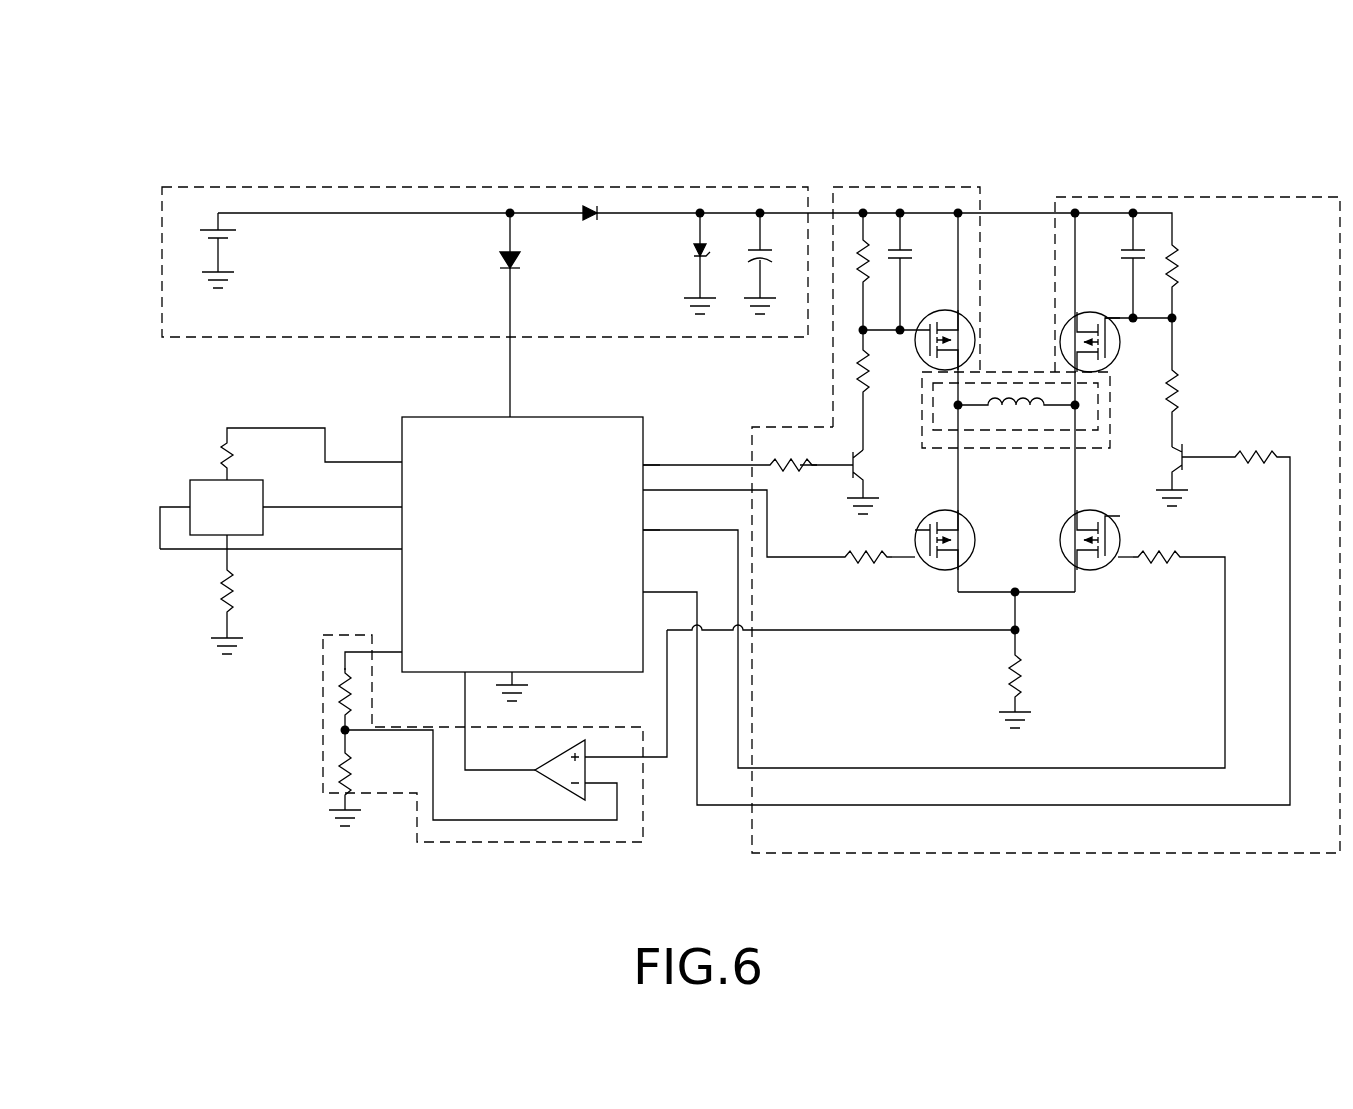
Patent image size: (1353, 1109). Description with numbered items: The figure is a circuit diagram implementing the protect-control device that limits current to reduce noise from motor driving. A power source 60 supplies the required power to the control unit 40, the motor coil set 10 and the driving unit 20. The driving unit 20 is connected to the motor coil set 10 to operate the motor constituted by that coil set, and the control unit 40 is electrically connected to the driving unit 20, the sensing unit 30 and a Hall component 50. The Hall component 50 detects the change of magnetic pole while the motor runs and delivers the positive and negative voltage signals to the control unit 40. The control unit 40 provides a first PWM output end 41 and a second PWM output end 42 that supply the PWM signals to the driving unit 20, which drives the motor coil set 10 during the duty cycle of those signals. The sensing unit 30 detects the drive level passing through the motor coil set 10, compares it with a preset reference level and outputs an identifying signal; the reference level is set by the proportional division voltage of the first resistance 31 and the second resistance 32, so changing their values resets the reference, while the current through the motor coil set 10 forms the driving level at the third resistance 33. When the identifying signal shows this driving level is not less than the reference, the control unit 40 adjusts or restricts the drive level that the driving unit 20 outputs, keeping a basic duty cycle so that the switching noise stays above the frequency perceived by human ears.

The motor coil set 10 is at (1015, 378).
The driving unit 20 is at (962, 518).
The sensing unit 30 is at (429, 734).
The first resistance 31 is at (340, 668).
The second resistance 32 is at (342, 770).
The third resistance 33 is at (1018, 665).
The control unit 40 is at (452, 417).
The first PWM output end 41 is at (645, 530).
The second PWM output end 42 is at (647, 465).
The Hall component 50 is at (192, 480).
The power source 60 is at (233, 186).